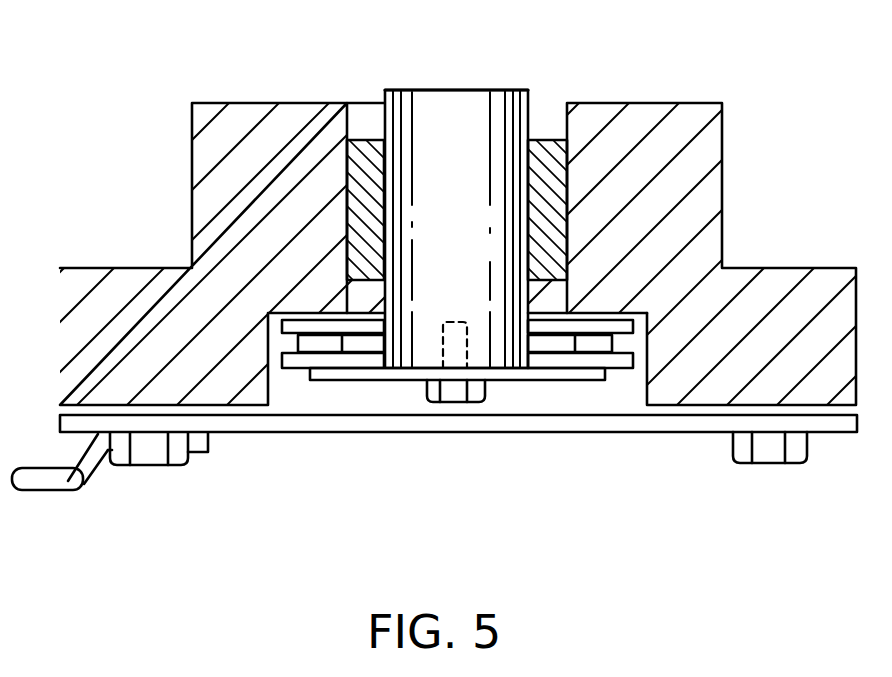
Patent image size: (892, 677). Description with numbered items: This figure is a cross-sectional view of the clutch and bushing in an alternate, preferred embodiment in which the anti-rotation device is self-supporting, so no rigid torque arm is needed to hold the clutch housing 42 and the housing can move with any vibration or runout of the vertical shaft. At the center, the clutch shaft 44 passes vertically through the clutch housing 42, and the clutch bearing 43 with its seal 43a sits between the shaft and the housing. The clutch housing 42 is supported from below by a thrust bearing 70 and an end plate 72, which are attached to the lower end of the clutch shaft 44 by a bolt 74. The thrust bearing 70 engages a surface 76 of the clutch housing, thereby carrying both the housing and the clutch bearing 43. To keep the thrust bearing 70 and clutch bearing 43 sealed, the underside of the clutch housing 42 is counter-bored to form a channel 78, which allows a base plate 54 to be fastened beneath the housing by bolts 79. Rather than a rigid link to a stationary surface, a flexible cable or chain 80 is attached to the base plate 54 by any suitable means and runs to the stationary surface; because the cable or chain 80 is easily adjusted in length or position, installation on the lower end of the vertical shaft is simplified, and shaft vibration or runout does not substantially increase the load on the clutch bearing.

The clutch housing 42 is at (258, 103).
The seal 43a is at (368, 107).
The clutch bearing 43 is at (570, 177).
The clutch shaft 44 is at (467, 88).
The surface 76 is at (610, 318).
The thrust bearing 70 is at (603, 345).
The channel 78 is at (270, 390).
The end plate 72 is at (555, 380).
The bolt 74 is at (460, 402).
The base plate 54 is at (272, 433).
The bolts 79 is at (147, 465).
The flexible cable or chain 80 is at (37, 482).